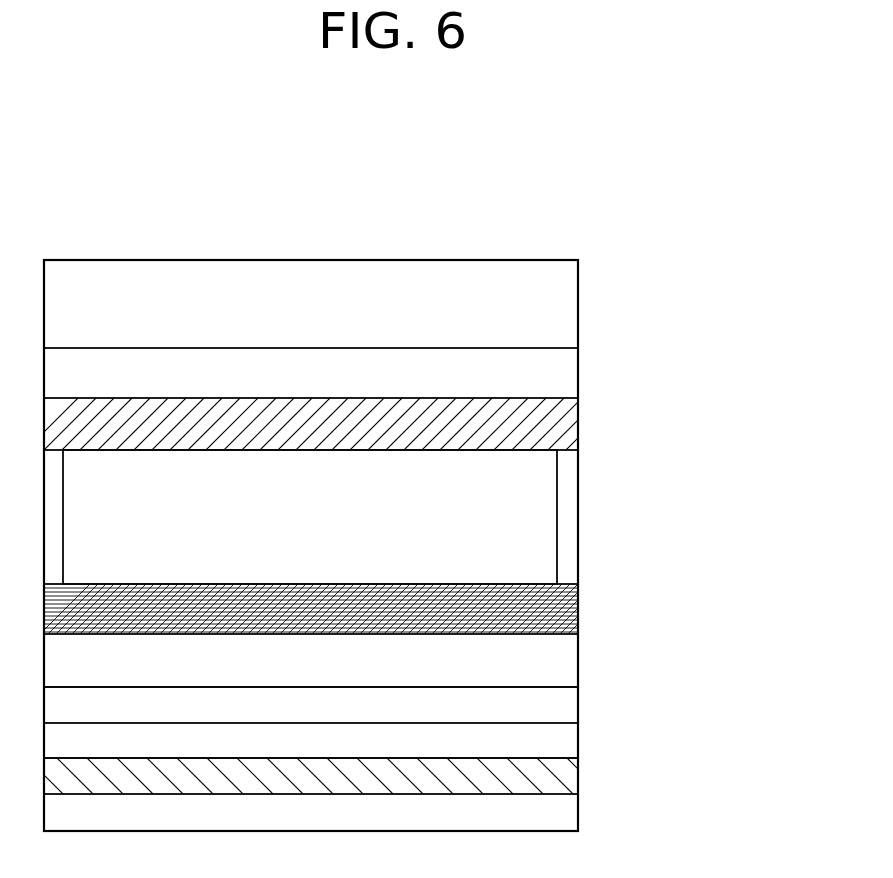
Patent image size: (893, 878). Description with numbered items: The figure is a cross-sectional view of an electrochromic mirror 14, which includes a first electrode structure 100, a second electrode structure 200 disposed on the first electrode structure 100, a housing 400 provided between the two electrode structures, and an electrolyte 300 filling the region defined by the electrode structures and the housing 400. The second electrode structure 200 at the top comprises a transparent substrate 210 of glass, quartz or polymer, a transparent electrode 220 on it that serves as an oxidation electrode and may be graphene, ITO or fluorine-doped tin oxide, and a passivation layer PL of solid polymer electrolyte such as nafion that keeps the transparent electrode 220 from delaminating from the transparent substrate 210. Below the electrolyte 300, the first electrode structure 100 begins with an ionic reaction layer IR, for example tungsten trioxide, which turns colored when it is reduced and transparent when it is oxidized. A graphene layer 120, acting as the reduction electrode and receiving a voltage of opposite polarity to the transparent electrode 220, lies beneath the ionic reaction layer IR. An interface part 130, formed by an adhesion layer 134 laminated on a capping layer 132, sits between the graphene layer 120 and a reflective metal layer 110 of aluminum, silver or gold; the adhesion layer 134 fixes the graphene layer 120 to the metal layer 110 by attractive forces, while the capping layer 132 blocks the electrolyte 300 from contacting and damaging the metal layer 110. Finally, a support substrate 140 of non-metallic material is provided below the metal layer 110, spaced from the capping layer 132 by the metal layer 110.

The electrochromic mirror 14 is at (526, 194).
The transparent substrate 210 is at (565, 303).
The transparent electrode 220 is at (565, 373).
The passivation layer PL is at (565, 424).
The housing 400 is at (570, 492).
The electrolyte 300 is at (540, 542).
The ionic reaction layer IR is at (565, 612).
The graphene layer 120 is at (565, 661).
The adhesion layer 134 is at (565, 703).
The capping layer 132 is at (565, 740).
The interface part 130 is at (385, 722).
The metal layer 110 is at (565, 776).
The support substrate 140 is at (565, 813).
The second electrode structure 200 is at (727, 260).
The first electrode structure 100 is at (728, 583).